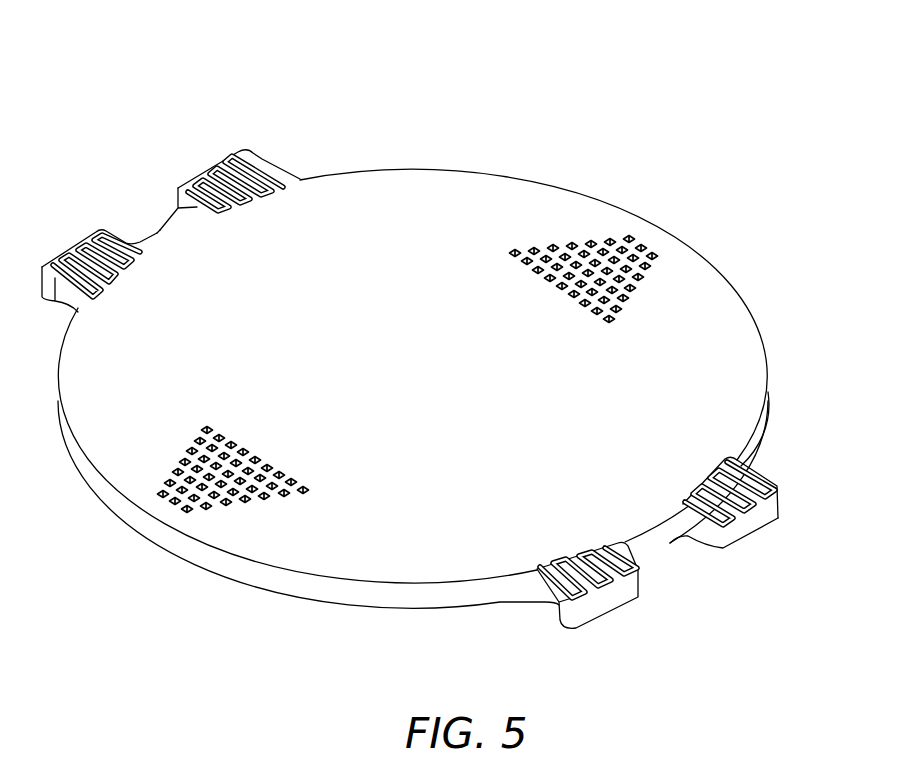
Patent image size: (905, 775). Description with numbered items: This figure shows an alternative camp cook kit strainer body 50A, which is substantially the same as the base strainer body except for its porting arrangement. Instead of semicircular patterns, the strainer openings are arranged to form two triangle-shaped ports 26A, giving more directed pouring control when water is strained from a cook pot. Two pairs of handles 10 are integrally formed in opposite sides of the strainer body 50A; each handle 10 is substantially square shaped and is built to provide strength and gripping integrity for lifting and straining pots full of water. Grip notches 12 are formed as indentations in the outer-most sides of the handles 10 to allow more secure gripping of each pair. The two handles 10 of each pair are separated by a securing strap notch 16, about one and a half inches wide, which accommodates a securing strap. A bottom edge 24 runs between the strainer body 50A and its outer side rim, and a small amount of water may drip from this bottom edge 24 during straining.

The strainer body 50A is at (470, 147).
The handle 10 is at (207, 158).
The grip notch 12 is at (765, 470).
The securing strap notch 16 is at (683, 540).
The bottom edge 24 is at (297, 597).
The triangle-shaped port 26A is at (640, 307).